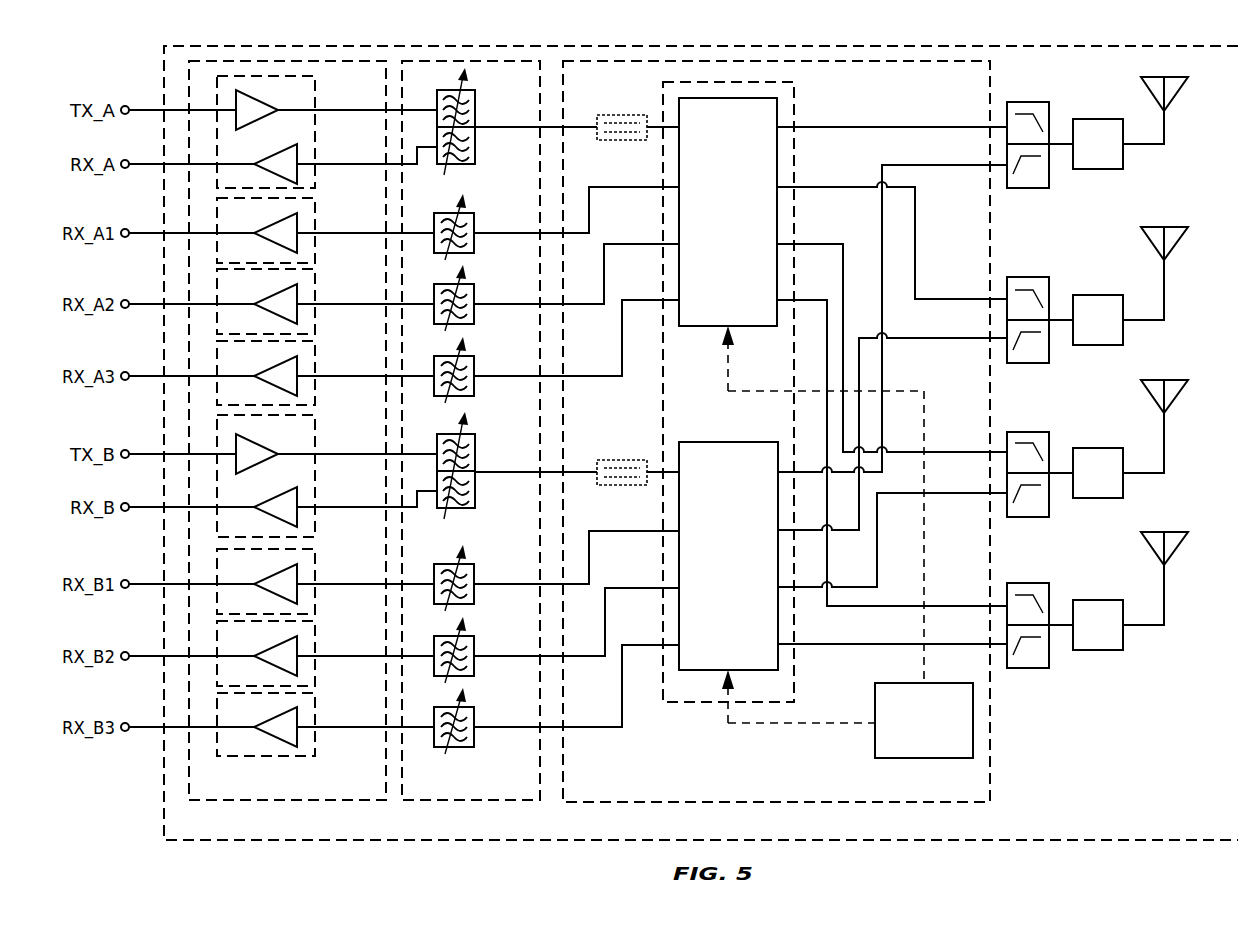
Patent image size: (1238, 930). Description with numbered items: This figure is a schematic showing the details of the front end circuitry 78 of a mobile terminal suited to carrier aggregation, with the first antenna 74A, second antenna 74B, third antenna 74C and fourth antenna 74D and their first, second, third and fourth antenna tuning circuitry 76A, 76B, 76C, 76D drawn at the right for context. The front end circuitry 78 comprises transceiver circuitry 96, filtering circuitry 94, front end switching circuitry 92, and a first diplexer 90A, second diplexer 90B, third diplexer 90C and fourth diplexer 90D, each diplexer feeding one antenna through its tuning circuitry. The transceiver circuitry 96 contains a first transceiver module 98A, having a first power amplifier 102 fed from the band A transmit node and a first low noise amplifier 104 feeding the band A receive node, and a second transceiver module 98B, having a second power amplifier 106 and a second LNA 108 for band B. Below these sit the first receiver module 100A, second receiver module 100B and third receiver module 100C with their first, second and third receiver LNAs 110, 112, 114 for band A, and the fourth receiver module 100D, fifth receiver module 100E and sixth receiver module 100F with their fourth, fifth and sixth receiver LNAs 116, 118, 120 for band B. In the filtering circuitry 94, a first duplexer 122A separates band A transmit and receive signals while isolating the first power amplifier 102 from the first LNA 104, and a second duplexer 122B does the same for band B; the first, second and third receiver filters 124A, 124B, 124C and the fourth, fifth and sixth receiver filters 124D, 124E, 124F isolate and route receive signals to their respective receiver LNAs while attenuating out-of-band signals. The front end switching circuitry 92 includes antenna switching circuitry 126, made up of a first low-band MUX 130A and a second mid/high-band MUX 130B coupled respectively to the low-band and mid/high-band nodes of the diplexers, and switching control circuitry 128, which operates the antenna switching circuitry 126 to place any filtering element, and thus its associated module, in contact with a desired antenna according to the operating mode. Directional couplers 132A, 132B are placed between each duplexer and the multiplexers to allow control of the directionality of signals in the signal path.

The first antenna 74A is at (1177, 78).
The second antenna 74B is at (1177, 228).
The third antenna 74C is at (1177, 381).
The fourth antenna 74D is at (1177, 533).
The first antenna tuning circuitry 76A is at (1083, 161).
The second antenna tuning circuitry 76B is at (1083, 337).
The third antenna tuning circuitry 76C is at (1083, 490).
The fourth antenna tuning circuitry 76D is at (1083, 642).
The front end circuitry 78 is at (422, 834).
The first diplexer 90A is at (1027, 188).
The second diplexer 90B is at (1027, 363).
The third diplexer 90C is at (1027, 517).
The fourth diplexer 90D is at (1027, 668).
The front end switching circuitry 92 is at (916, 790).
The filtering circuitry 94 is at (520, 794).
The transceiver circuitry 96 is at (358, 794).
The first transceiver module 98A is at (315, 96).
The second transceiver module 98B is at (315, 440).
The first receiver module 100A is at (315, 218).
The second receiver module 100B is at (315, 290).
The third receiver module 100C is at (315, 362).
The fourth receiver module 100D is at (315, 569).
The fifth receiver module 100E is at (315, 641).
The sixth receiver module 100F is at (315, 712).
The first power amplifier 102 is at (258, 100).
The first low noise amplifier 104 is at (269, 154).
The second power amplifier 106 is at (258, 444).
The second low noise amplifier 108 is at (269, 497).
The first receiver LNA 110 is at (275, 223).
The second receiver LNA 112 is at (275, 294).
The third receiver LNA 114 is at (275, 366).
The fourth receiver LNA 116 is at (275, 574).
The fifth receiver LNA 118 is at (275, 646).
The sixth receiver LNA 120 is at (275, 717).
The first duplexer 122A is at (461, 170).
The second duplexer 122B is at (461, 514).
The first receiver filter 124A is at (475, 228).
The second receiver filter 124B is at (475, 299).
The third receiver filter 124C is at (475, 371).
The fourth receiver filter 124D is at (475, 579).
The fifth receiver filter 124E is at (475, 651).
The sixth receiver filter 124F is at (475, 722).
The antenna switching circuitry 126 is at (688, 702).
The switching control circuitry 128 is at (910, 757).
The first low-band MUX 130A is at (707, 221).
The second mid/high-band MUX 130B is at (707, 572).
The directional coupler 132A is at (625, 114).
The directional coupler 132B is at (625, 459).